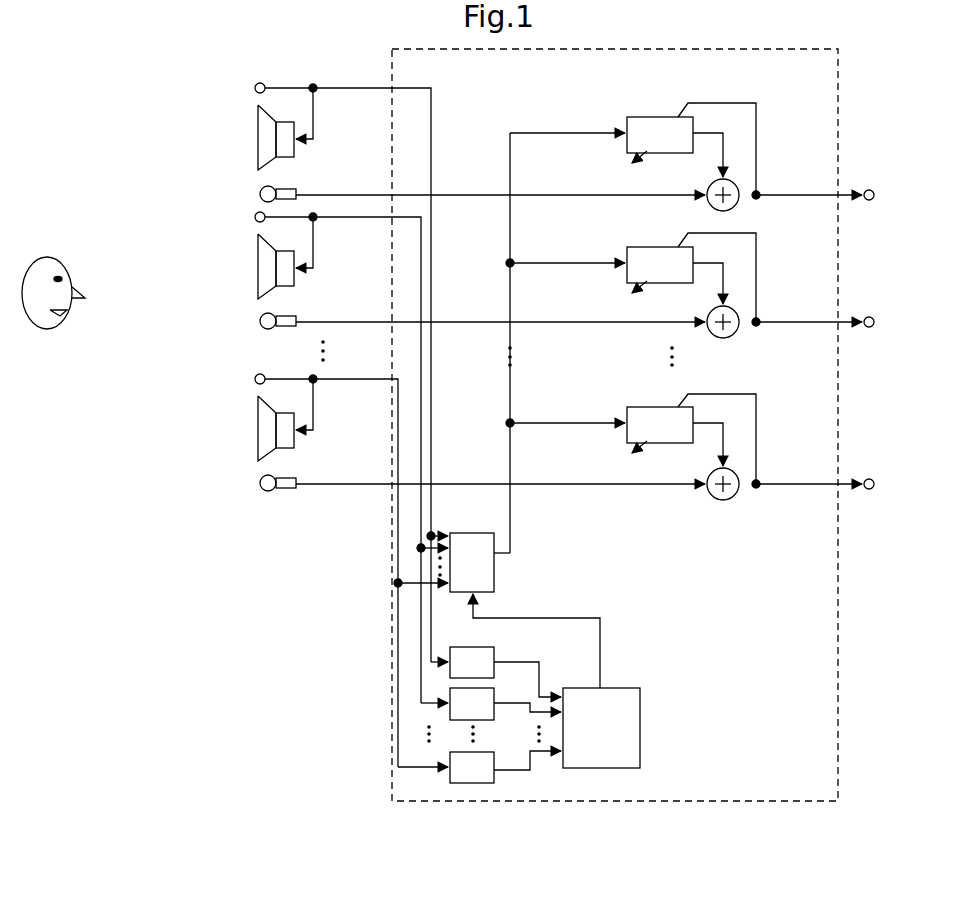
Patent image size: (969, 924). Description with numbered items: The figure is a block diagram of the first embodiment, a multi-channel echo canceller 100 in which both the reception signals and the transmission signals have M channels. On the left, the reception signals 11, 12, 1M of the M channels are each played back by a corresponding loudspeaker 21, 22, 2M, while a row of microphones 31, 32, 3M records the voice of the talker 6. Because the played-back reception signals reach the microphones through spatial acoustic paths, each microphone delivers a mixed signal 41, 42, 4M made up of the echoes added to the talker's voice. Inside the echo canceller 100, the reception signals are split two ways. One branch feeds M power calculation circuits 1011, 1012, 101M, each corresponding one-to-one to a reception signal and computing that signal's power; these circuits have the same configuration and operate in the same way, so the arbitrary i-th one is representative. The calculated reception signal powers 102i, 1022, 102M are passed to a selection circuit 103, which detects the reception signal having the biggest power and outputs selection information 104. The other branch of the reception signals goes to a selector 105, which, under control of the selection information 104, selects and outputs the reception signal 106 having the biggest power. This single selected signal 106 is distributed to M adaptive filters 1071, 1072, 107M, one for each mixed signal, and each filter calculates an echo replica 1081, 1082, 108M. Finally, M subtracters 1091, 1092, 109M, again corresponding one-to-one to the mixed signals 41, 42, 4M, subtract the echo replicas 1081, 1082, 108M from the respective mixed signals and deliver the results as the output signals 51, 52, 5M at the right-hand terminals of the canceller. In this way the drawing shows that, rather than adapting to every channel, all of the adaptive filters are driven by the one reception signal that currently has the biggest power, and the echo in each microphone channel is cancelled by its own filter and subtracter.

The multi-channel echo canceller 100 is at (615, 471).
The talker 6 is at (53, 250).
The loudspeaker 21 is at (231, 130).
The loudspeaker 22 is at (231, 259).
The loudspeaker 2M is at (231, 421).
The microphone 31 is at (436, 176).
The microphone 32 is at (436, 304).
The microphone 3M is at (436, 466).
The mixed signal 41 is at (320, 140).
The mixed signal 42 is at (320, 269).
The mixed signal 4M is at (320, 431).
The reception signal 11 is at (343, 372).
The reception signal 12 is at (338, 457).
The reception signal 1M is at (326, 570).
The output signal 51 is at (827, 152).
The output signal 52 is at (827, 281).
The output signal 5M is at (829, 442).
The power calculation circuit 1011 is at (398, 639).
The power calculation circuit 1012 is at (398, 685).
The power calculation circuit 101M is at (446, 825).
The reception signal power 102i is at (554, 640).
The reception signal power 1022 is at (576, 670).
The reception signal power 102M is at (521, 804).
The selection circuit 103 is at (593, 788).
The selection information 104 is at (536, 613).
The selector 105 is at (452, 500).
The reception signal having the biggest power 106 is at (480, 343).
The adaptive filter 1071 is at (616, 131).
The adaptive filter 1072 is at (584, 226).
The adaptive filter 107M is at (584, 412).
The echo replica 1081 is at (733, 137).
The echo replica 1082 is at (733, 266).
The echo replica 108M is at (735, 427).
The subtracter 1091 is at (747, 168).
The subtracter 1092 is at (747, 296).
The subtracter 109M is at (749, 458).